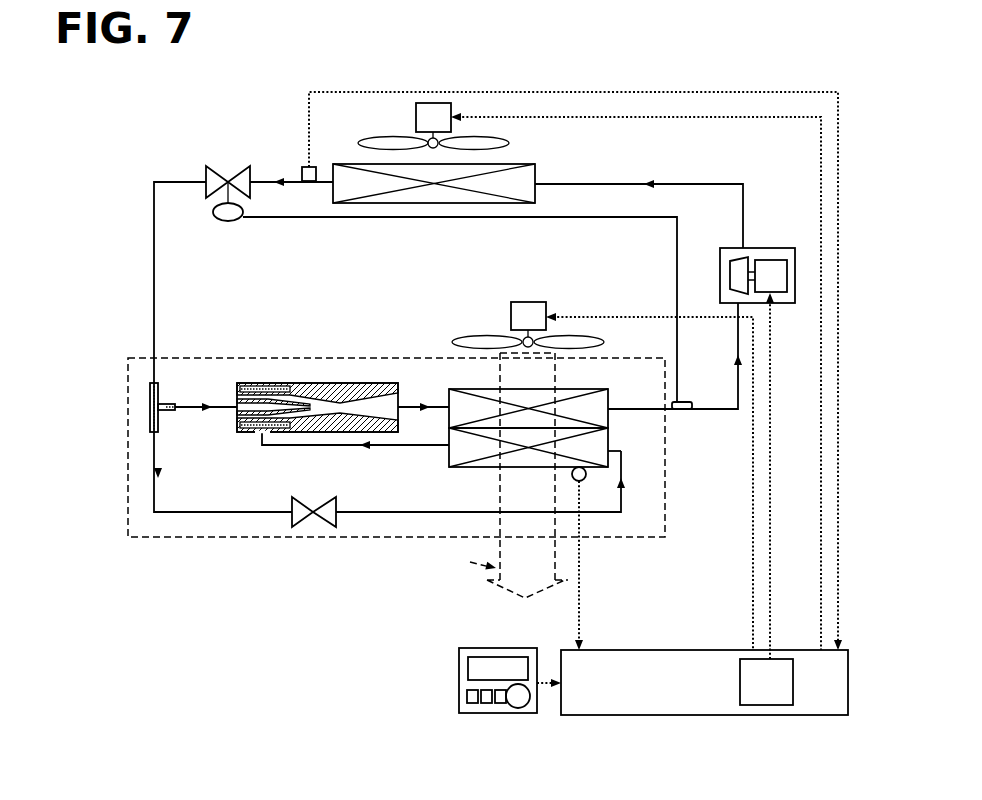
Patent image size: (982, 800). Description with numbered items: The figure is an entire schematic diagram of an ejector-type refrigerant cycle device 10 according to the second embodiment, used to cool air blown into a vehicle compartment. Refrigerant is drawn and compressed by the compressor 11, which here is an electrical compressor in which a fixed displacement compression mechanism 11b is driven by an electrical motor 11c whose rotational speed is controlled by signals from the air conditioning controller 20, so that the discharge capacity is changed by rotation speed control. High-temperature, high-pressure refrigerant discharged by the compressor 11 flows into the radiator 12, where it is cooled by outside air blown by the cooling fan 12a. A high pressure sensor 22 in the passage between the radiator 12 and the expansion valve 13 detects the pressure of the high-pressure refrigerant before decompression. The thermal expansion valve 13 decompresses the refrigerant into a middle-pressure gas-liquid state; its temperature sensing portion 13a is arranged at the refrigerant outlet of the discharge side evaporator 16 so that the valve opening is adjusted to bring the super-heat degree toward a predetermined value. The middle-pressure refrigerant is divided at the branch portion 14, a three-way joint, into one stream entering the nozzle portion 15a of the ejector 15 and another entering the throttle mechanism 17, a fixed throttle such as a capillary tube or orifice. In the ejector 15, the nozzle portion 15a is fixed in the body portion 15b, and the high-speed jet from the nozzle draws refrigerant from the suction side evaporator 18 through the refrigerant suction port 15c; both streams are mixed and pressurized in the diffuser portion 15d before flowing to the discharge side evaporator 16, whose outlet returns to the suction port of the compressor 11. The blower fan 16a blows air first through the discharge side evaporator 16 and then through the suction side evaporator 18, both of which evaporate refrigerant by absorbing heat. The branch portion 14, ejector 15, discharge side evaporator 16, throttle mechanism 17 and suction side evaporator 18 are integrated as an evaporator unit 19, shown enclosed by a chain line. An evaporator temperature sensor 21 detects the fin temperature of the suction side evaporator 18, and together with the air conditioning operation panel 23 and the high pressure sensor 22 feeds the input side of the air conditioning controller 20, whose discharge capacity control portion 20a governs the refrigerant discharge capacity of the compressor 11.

The ejector-type refrigerant cycle device 10 is at (163, 150).
The compressor 11 is at (748, 424).
The fixed displacement compression mechanism 11b is at (728, 256).
The electrical motor 11c is at (782, 259).
The radiator 12 is at (537, 166).
The cooling fan 12a is at (416, 116).
The expansion valve 13 is at (222, 170).
The temperature sensing portion 13a is at (683, 402).
The branch portion 14 is at (166, 400).
The ejector 15 is at (302, 388).
The nozzle portion 15a is at (278, 401).
The body portion 15b is at (330, 386).
The refrigerant suction port 15c is at (256, 433).
The diffuser portion 15d is at (369, 401).
The discharge side evaporator 16 is at (609, 426).
The blower fan 16a is at (511, 314).
The throttle mechanism 17 is at (308, 501).
The suction side evaporator 18 is at (490, 469).
The evaporator unit 19 is at (174, 543).
The air conditioning controller 20 is at (704, 660).
The discharge capacity control portion 20a is at (740, 685).
The evaporator temperature sensor 21 is at (585, 481).
The high pressure sensor 22 is at (303, 166).
The air conditioning operation panel 23 is at (459, 682).